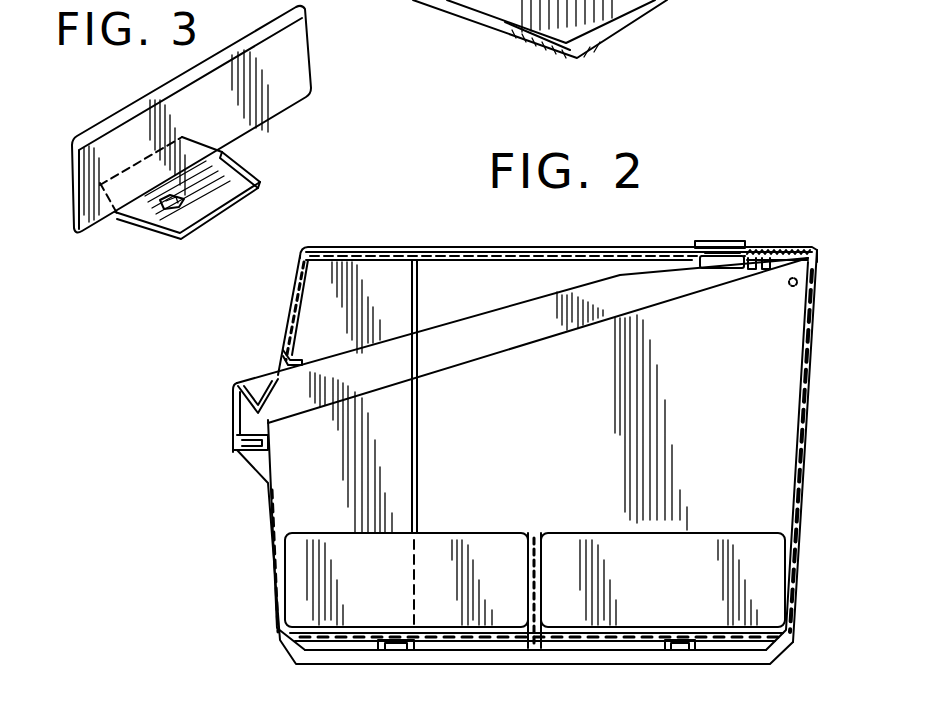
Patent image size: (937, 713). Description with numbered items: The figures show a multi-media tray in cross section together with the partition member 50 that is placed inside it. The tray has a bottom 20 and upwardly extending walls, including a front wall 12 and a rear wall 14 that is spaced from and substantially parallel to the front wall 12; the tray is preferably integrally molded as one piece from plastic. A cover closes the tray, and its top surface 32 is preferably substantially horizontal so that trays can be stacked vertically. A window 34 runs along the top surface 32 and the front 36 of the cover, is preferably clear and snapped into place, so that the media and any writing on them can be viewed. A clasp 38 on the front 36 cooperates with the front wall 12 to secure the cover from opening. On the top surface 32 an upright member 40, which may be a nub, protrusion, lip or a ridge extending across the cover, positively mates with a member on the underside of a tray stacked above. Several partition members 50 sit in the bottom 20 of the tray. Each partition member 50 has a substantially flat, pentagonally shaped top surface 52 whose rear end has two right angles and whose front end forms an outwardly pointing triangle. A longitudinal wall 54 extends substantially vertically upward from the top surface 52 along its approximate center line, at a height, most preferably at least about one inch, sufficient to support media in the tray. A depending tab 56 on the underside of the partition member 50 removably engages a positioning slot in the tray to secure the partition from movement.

In FIG. 2, the front wall 12 is at (268, 535).
In FIG. 2, the rear wall 14 is at (811, 431).
In FIG. 2, the bottom 20 is at (578, 666).
In FIG. 2, the top surface 32 is at (649, 243).
In FIG. 2, the window 34 is at (462, 250).
In FIG. 2, the front 36 is at (238, 410).
In FIG. 2, the clasp 38 is at (236, 445).
In FIG. 2, the upright member 40 is at (716, 243).
In FIG. 3, the partition member 50 is at (58, 171).
In FIG. 3, the top surface 52 is at (229, 181).
In FIG. 3, the longitudinal wall 54 is at (292, 76).
In FIG. 2, the longitudinal wall 54 is at (386, 591).
In FIG. 3, the depending tab 56 is at (158, 212).
In FIG. 2, the depending tab 56 is at (681, 652).